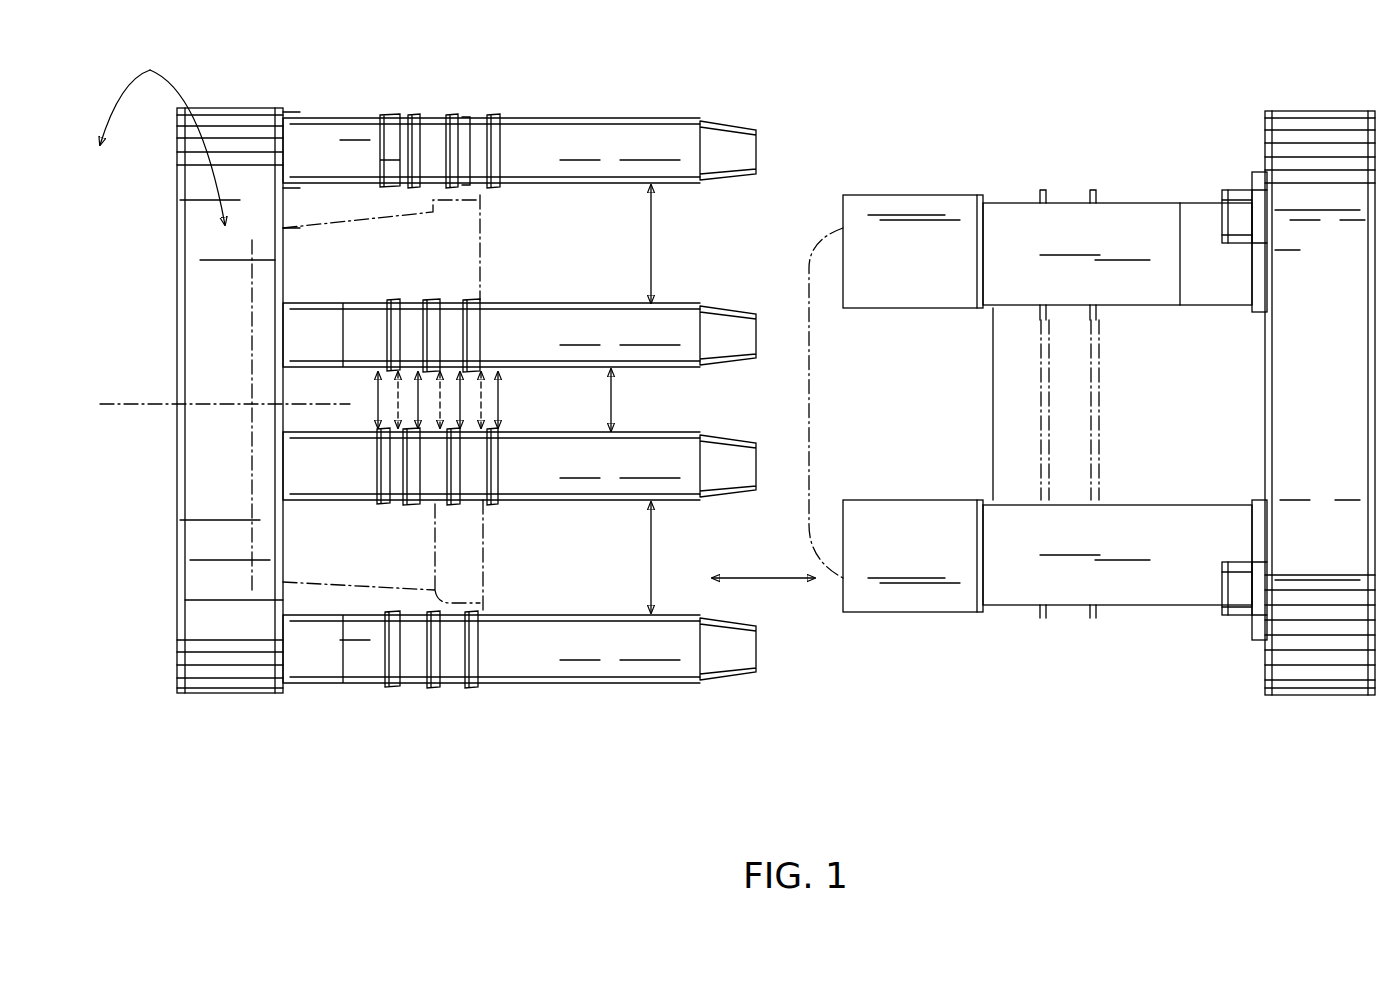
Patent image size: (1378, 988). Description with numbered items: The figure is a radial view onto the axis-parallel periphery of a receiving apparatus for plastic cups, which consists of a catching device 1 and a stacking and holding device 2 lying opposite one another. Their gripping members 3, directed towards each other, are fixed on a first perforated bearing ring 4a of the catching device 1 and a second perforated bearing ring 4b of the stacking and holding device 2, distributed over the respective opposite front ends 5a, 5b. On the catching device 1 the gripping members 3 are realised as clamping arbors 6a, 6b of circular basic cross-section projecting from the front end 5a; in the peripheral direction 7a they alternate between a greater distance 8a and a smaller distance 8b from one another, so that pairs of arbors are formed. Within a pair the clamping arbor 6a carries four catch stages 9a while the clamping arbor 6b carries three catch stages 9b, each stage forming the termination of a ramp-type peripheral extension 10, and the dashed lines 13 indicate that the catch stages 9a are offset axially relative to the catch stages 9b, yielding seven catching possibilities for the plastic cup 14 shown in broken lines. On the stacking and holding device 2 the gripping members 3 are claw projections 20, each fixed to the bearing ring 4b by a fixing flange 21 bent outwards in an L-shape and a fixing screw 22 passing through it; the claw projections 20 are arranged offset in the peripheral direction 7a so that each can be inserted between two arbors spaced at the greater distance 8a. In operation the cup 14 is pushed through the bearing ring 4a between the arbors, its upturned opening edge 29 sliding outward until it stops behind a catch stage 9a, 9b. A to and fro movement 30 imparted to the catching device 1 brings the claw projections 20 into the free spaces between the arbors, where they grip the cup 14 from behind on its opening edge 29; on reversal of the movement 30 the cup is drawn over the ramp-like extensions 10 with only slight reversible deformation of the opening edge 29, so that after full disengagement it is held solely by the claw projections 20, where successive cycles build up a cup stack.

The catching device 1 is at (570, 95).
The stacking and holding device 2 is at (1085, 160).
The gripping members 3 is at (712, 100).
The first bearing ring 4a is at (233, 108).
The second bearing ring 4b is at (1318, 111).
The front end 5a is at (285, 205).
The front end 5b is at (1270, 372).
The clamping arbor 6a is at (596, 118).
The clamping arbor 6b is at (572, 300).
The peripheral direction 7a is at (150, 70).
The greater distance 8a is at (655, 252).
The smaller distance 8b is at (614, 405).
The catch stages 9a is at (430, 110).
The catch stages 9b is at (405, 300).
The ramp-type peripheral extensions 10 is at (468, 112).
The dashed lines 13 is at (485, 400).
The plastic cup 14 is at (245, 290).
The claw projections 20 is at (1175, 200).
The fixing flange 21 is at (1257, 172).
The fixing screw 22 is at (1230, 190).
The opening edge 29 is at (488, 605).
The to and fro movement 30 is at (775, 582).